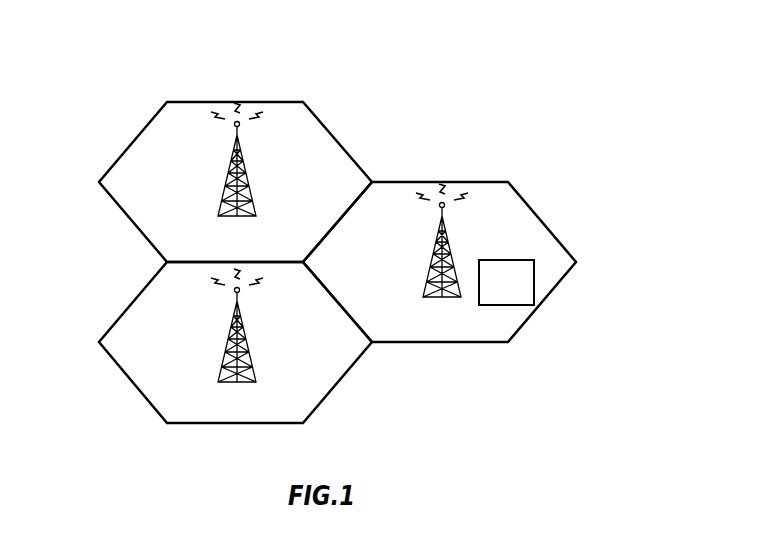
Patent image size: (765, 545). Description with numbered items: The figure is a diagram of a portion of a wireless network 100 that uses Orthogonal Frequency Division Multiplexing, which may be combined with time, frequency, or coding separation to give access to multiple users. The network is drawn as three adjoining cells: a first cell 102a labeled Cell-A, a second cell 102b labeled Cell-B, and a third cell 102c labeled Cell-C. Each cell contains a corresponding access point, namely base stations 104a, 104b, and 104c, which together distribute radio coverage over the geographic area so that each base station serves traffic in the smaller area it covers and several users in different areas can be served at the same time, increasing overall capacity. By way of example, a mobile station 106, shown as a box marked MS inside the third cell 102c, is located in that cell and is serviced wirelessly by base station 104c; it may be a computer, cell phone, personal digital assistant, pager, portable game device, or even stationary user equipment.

The wireless network 100 is at (463, 148).
The cell 102a is at (135, 142).
The cell 102b is at (137, 300).
The cell 102c is at (542, 222).
The base station 104a is at (227, 177).
The base station 104b is at (227, 342).
The base station 104c is at (433, 258).
The mobile station 106 is at (529, 305).